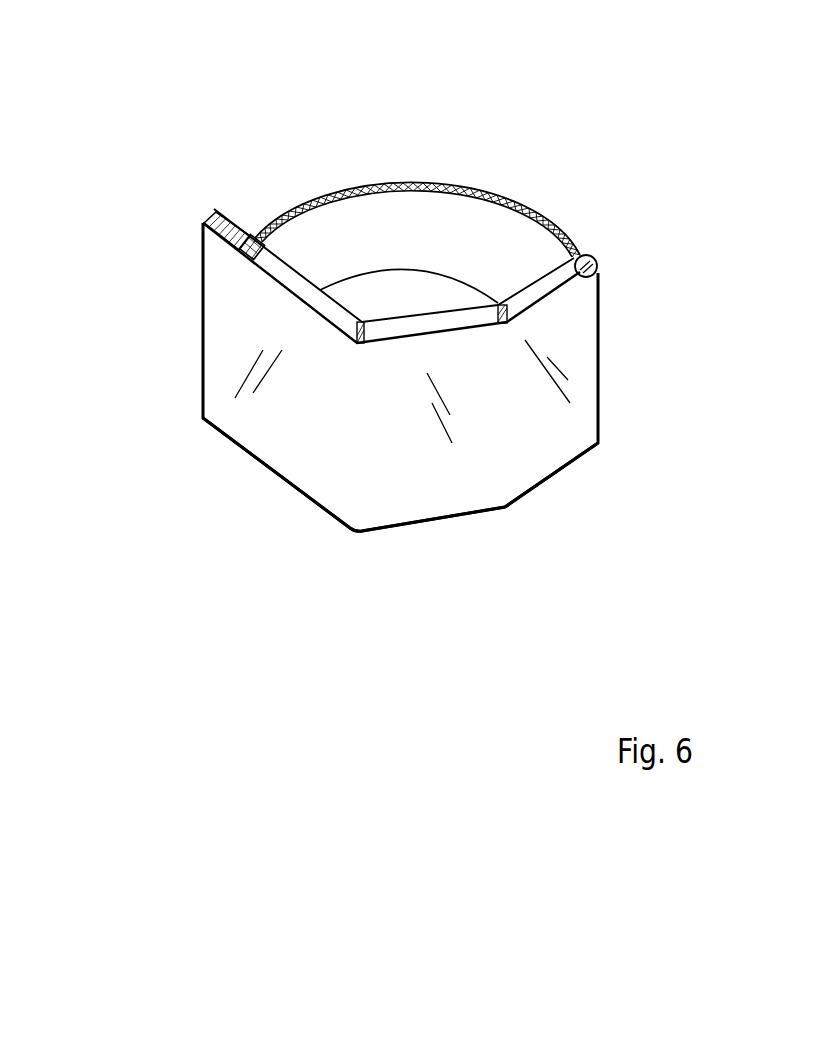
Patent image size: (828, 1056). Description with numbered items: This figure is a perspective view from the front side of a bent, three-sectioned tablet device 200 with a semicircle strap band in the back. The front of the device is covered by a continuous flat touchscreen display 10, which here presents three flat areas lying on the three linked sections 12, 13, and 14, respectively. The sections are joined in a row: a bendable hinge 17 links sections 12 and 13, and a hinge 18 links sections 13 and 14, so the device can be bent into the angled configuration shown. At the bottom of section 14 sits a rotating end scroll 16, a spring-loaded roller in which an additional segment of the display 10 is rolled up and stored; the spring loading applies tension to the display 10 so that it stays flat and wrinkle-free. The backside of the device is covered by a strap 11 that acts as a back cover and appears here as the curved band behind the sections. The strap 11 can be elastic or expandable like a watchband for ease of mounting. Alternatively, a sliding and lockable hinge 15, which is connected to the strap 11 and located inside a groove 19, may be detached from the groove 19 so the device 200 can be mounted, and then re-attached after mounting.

The device 200 is at (92, 104).
The display 10 is at (257, 446).
The strap 11 is at (430, 170).
The section 12 is at (297, 495).
The section 13 is at (433, 523).
The section 14 is at (533, 493).
The sliding and lockable hinge 15 is at (245, 255).
The rotating end scroll 16 is at (598, 261).
The bendable hinge 17 is at (362, 320).
The hinge 18 is at (505, 303).
The groove 19 is at (203, 237).